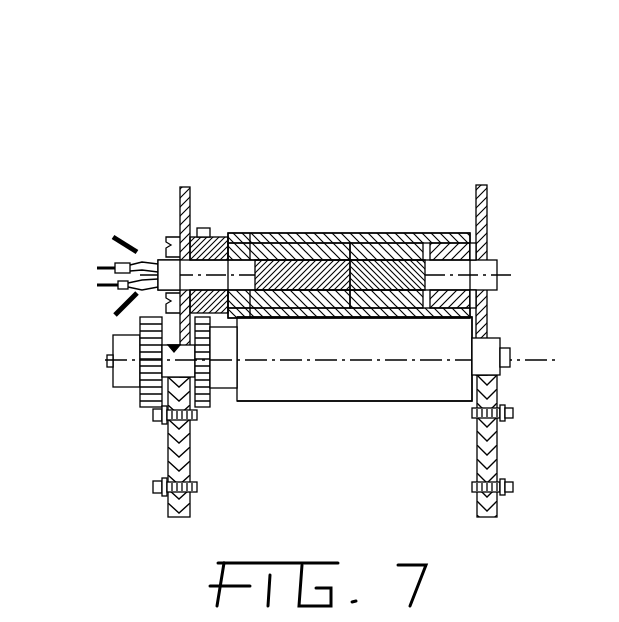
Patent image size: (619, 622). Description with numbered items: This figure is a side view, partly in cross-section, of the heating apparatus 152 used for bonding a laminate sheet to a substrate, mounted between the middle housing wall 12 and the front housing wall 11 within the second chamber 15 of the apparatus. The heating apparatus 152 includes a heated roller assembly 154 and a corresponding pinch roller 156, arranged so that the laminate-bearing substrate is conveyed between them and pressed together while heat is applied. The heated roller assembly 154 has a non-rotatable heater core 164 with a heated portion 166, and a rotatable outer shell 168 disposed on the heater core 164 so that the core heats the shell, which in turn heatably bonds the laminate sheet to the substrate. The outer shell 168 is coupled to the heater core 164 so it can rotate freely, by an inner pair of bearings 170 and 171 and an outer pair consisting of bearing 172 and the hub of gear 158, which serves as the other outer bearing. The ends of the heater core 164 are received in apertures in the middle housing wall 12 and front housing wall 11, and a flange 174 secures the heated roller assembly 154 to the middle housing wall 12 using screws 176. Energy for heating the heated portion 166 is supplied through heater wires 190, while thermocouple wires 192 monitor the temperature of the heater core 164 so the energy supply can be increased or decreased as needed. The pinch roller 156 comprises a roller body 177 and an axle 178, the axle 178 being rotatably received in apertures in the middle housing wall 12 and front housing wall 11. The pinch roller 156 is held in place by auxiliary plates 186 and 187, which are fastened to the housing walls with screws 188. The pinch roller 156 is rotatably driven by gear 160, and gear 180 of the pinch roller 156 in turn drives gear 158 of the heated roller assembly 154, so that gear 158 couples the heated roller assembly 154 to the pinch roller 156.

The front housing wall 11 is at (488, 205).
The middle housing wall 12 is at (181, 192).
The second chamber 15 is at (348, 496).
The heating apparatus 152 is at (340, 118).
The heated roller assembly 154 is at (326, 232).
The pinch roller 156 is at (340, 401).
The gear 158 is at (205, 228).
The gear 160 is at (125, 388).
The non-rotatable heater core 164 is at (255, 235).
The heated portion 166 is at (358, 235).
The rotatable outer shell 168 is at (405, 235).
The bearing 170 is at (487, 305).
The bearing 171 is at (225, 238).
The bearing 172 is at (458, 240).
The flange 174 is at (175, 243).
The screws 176 is at (167, 245).
The roller body 177 is at (397, 387).
The axle 178 is at (500, 350).
The gear 180 is at (210, 395).
The auxiliary plate 186 is at (497, 445).
The auxiliary plate 187 is at (168, 452).
The screws 188 is at (158, 490).
The heater wires 190 is at (97, 284).
The thermocouple wires 192 is at (115, 235).